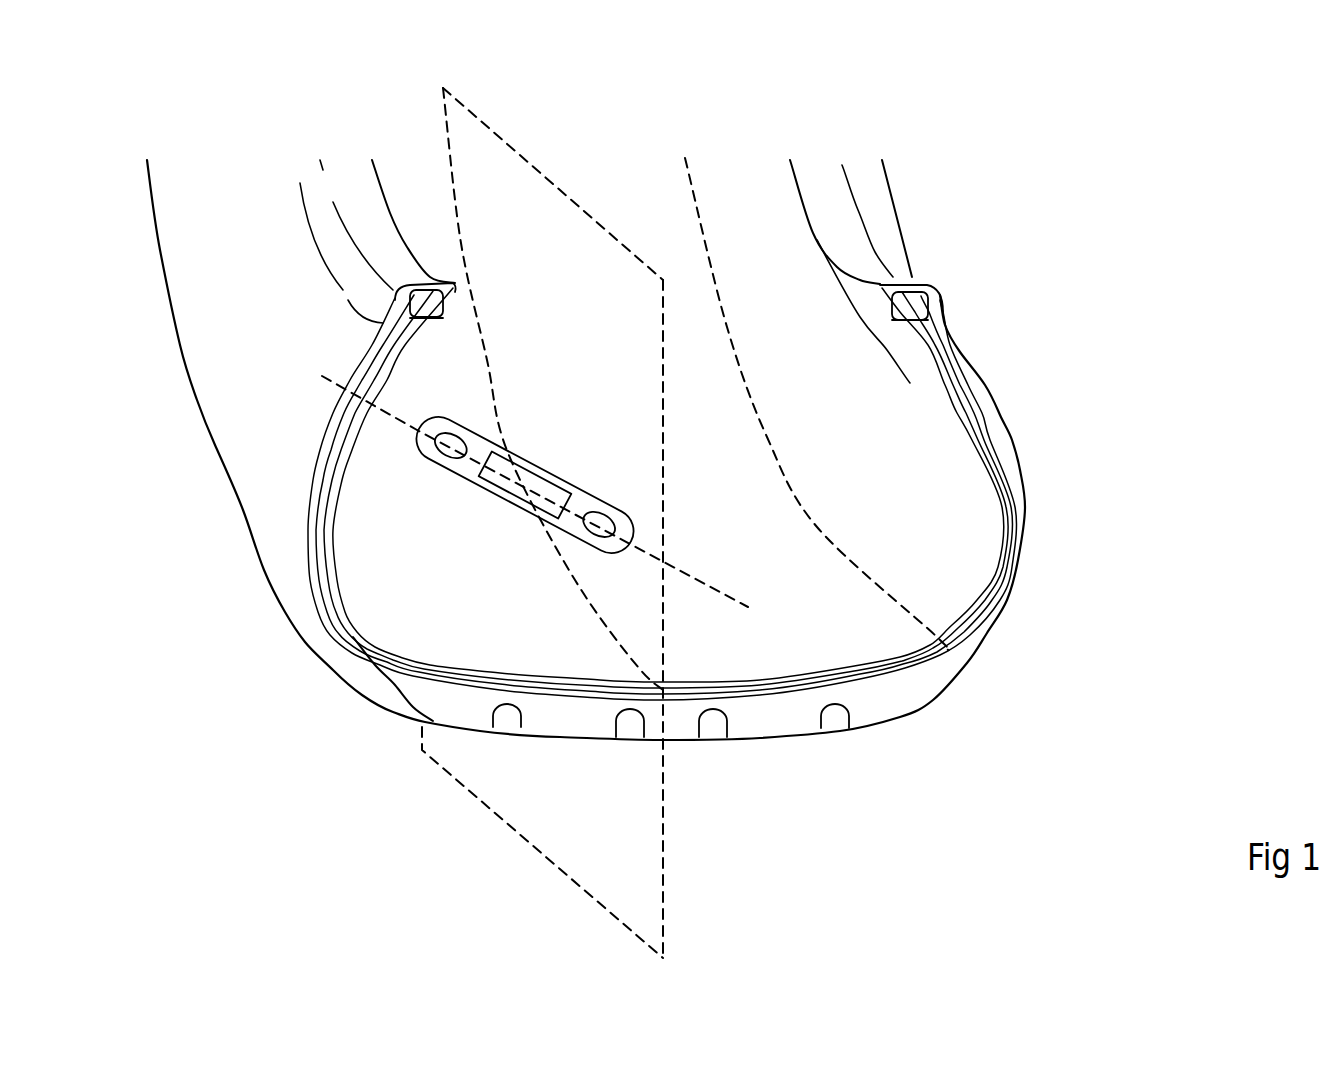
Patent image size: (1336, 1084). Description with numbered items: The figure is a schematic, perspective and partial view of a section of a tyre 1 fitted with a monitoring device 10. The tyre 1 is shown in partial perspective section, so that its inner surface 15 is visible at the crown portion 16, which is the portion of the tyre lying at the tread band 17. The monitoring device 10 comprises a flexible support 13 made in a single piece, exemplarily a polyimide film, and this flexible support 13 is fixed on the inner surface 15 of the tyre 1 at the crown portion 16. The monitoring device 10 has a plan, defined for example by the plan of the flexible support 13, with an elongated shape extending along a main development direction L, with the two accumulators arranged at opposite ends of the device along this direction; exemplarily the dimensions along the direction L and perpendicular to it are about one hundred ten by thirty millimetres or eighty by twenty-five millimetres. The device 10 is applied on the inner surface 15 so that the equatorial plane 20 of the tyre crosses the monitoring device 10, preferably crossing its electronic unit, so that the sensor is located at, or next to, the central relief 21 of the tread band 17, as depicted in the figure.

The tyre 1 is at (1150, 140).
The monitoring device 10 is at (655, 520).
The flexible support 13 is at (473, 480).
The inner surface 15 is at (869, 645).
The crown portion 16 is at (657, 748).
The tread band 17 is at (578, 725).
The equatorial plane 20 is at (460, 120).
The central relief 21 is at (688, 728).
The main development direction L is at (337, 383).